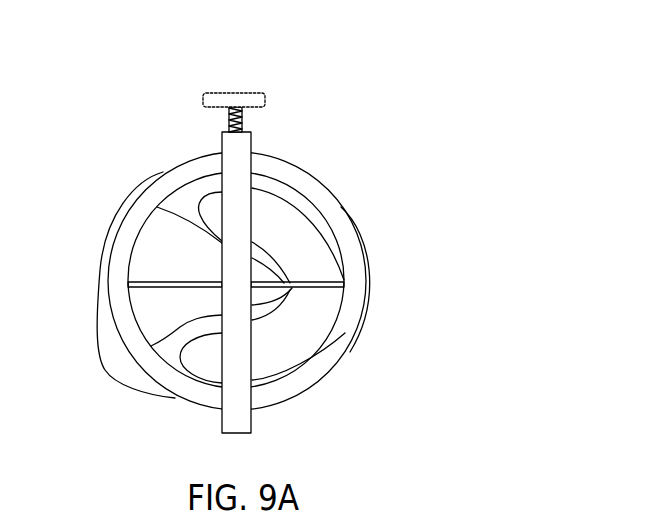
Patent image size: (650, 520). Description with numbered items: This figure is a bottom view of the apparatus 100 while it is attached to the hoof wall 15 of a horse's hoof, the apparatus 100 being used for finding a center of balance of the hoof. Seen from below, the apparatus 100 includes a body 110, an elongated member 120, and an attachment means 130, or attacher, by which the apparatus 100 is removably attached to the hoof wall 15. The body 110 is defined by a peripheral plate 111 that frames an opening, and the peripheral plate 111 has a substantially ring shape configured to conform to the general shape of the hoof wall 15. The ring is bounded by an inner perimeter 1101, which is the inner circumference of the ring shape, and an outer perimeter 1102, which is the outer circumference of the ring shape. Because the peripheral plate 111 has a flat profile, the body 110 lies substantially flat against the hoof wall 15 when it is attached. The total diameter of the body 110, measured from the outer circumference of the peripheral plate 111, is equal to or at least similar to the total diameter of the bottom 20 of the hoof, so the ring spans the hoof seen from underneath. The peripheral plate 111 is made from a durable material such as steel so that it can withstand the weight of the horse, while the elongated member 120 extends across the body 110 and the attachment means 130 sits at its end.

The apparatus 100 is at (308, 259).
The body 110 is at (313, 281).
The inner perimeter 1101 is at (342, 243).
The outer perimeter 1102 is at (363, 320).
The peripheral plate 111 is at (337, 348).
The hoof wall 15 is at (376, 256).
The bottom 20 is at (297, 242).
The elongated member 120 is at (237, 364).
The attachment means 130 is at (222, 93).